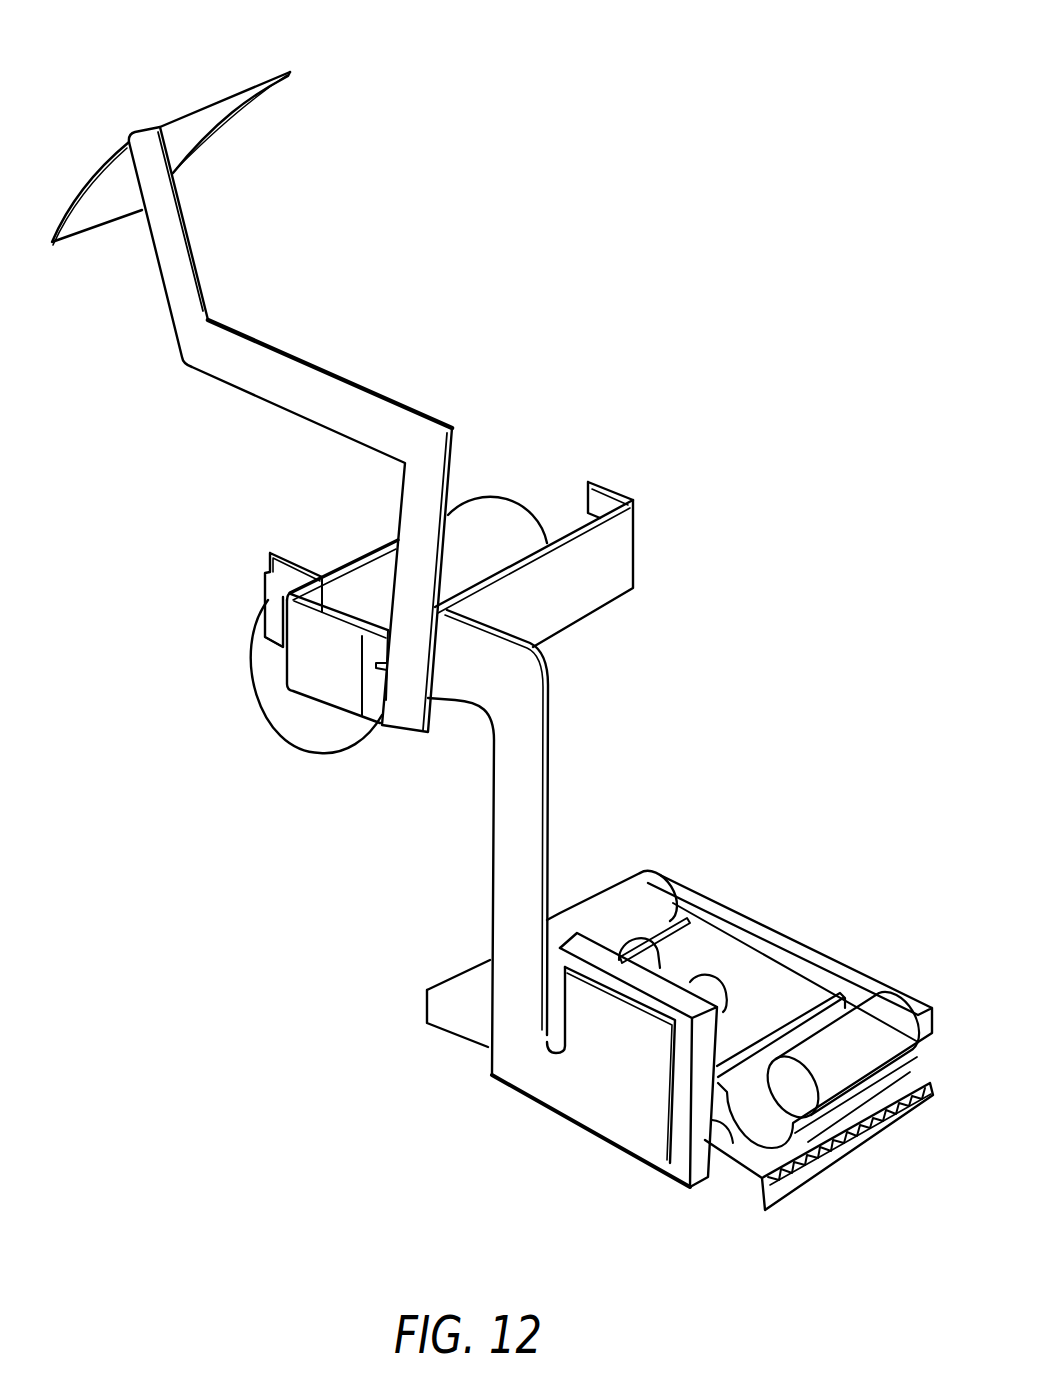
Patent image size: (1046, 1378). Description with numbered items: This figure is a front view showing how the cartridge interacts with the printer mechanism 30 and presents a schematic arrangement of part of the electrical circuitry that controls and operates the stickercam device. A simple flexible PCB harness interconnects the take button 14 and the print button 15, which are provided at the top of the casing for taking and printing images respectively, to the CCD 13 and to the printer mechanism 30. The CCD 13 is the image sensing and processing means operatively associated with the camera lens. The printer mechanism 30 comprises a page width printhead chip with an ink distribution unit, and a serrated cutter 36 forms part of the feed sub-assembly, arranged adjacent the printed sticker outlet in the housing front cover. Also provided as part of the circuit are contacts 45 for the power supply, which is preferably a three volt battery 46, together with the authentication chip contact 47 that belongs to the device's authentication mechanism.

The CCD 13 is at (270, 600).
The take button 14 is at (143, 113).
The print button 15 is at (257, 67).
The printer mechanism 30 is at (792, 903).
The serrated cutter 36 is at (790, 1170).
The contacts 45 is at (295, 557).
The three volt battery 46 is at (487, 510).
The authentication chip contact 47 is at (635, 552).